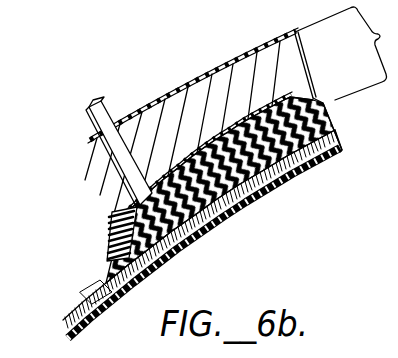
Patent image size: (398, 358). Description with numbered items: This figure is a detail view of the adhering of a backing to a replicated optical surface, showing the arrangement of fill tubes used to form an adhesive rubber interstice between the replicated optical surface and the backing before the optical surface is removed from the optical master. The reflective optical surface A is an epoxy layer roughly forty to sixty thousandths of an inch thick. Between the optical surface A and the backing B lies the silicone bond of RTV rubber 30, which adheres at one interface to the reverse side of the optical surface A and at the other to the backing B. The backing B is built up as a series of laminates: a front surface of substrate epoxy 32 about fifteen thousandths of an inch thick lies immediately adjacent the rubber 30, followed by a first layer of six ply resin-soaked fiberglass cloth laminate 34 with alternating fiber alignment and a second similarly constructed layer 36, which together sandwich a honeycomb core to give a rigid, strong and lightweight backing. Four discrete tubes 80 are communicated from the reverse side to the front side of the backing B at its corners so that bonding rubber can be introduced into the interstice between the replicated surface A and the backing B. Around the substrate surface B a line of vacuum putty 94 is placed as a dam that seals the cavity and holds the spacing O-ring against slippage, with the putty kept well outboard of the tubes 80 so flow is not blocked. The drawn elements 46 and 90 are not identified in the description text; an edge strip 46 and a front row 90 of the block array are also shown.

The RTV rubber 30 is at (327, 109).
The substrate epoxy 32 is at (318, 101).
The first layer of six ply resin-soaked fiberglass cloth laminate 34 is at (294, 99).
The second layer of fiberglass cloth laminate 36 is at (238, 60).
The base plate 46 is at (292, 170).
The tube 80 is at (103, 106).
The front row of blocks 90 is at (160, 258).
The putty 94 is at (113, 217).
The optical surface A is at (100, 277).
The backing B is at (346, 53).